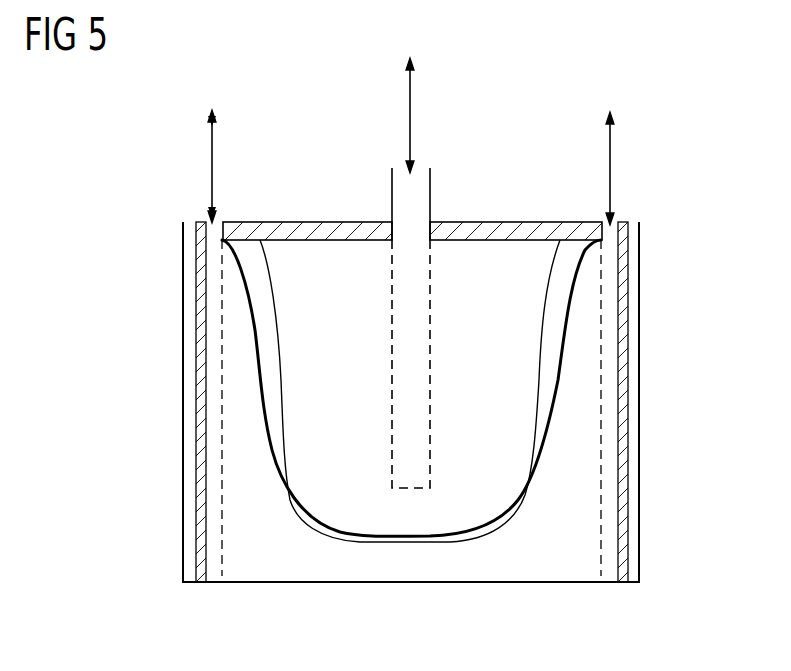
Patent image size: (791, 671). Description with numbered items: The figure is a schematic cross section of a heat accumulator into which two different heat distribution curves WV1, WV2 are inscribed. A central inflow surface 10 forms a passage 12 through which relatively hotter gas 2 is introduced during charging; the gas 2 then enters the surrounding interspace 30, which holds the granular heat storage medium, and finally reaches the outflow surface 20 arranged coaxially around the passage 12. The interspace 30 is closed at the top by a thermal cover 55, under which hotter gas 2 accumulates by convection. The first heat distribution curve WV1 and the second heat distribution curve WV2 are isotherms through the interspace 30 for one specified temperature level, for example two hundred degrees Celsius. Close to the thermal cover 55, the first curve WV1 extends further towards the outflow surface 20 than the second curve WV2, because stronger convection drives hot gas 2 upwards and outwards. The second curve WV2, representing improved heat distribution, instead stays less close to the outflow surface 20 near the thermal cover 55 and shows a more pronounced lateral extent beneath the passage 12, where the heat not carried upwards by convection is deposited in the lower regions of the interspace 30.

The gas 2 is at (212, 148).
The inflow surface 10 is at (430, 283).
The passage 12 is at (410, 372).
The outflow surface 20 is at (601, 375).
The interspace 30 is at (323, 268).
The thermal cover 55 is at (546, 229).
The first heat distribution curve WV1 is at (557, 408).
The second heat distribution curve WV2 is at (540, 328).